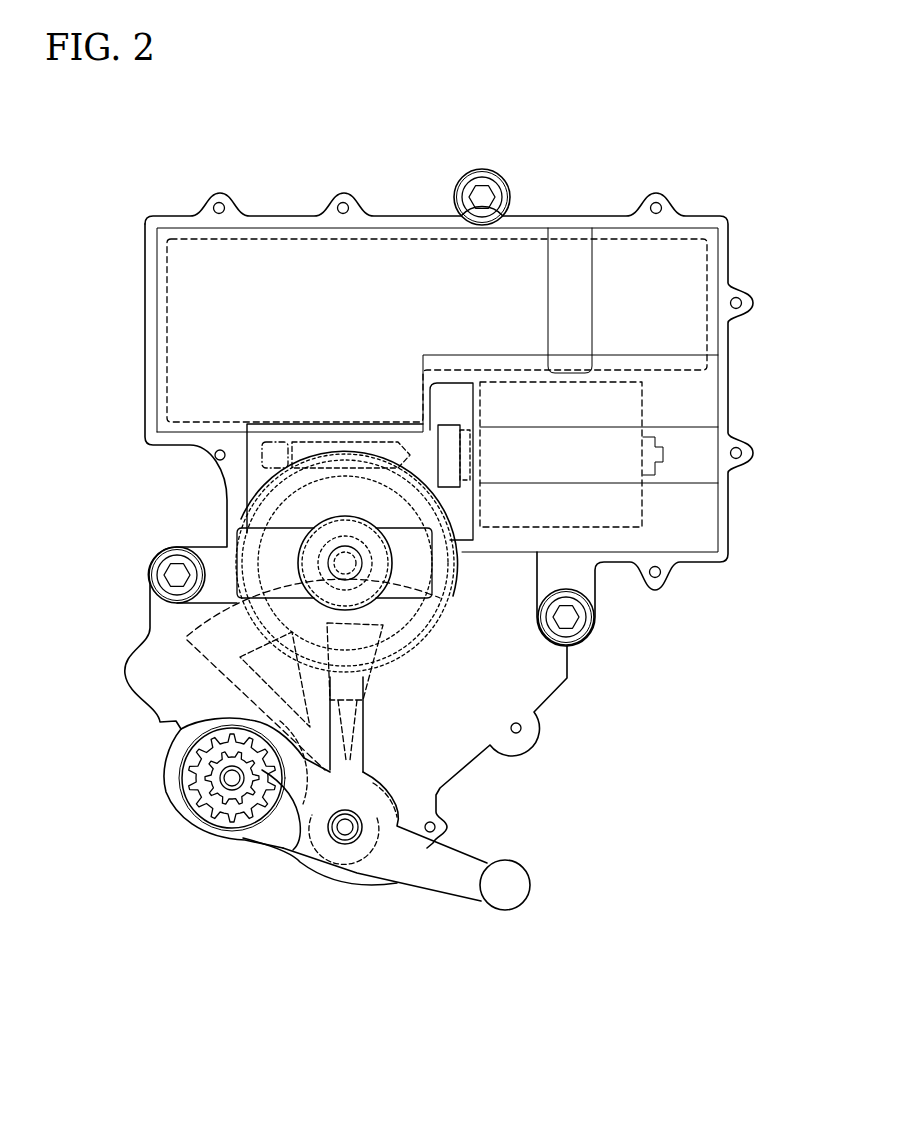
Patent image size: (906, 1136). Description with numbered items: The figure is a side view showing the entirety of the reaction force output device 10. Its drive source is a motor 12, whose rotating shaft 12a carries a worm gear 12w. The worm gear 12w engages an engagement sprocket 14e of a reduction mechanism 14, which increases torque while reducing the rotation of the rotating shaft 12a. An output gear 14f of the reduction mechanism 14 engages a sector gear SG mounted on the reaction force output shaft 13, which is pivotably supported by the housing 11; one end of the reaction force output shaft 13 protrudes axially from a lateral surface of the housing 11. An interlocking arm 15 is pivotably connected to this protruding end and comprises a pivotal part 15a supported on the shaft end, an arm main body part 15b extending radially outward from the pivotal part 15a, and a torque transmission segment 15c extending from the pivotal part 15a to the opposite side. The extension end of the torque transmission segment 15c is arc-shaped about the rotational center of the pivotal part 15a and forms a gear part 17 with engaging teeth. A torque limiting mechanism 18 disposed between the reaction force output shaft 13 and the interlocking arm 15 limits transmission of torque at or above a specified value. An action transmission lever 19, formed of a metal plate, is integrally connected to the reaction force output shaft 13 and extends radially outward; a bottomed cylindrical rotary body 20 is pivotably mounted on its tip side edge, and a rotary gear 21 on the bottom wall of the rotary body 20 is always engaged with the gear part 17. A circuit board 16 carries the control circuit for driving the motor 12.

The reaction force output device 10 is at (702, 181).
The housing 11 is at (725, 350).
The motor 12 is at (630, 517).
The rotating shaft 12a is at (468, 450).
The worm gear 12w is at (343, 440).
The reaction force output shaft 13 is at (346, 832).
The reduction mechanism 14 is at (250, 512).
The engagement sprocket 14e is at (248, 503).
The output gear 14f is at (345, 563).
The interlocking arm 15 is at (377, 890).
The pivotal part 15a is at (327, 840).
The arm main body part 15b is at (464, 887).
The torque transmission segment 15c is at (277, 832).
The circuit board 16 is at (300, 232).
The gear part 17 is at (248, 838).
The torque limiting mechanism 18 is at (150, 768).
The action transmission lever 19 is at (330, 762).
The rotary body 20 is at (182, 782).
The rotary gear 21 is at (213, 790).
The sector gear SG is at (178, 640).